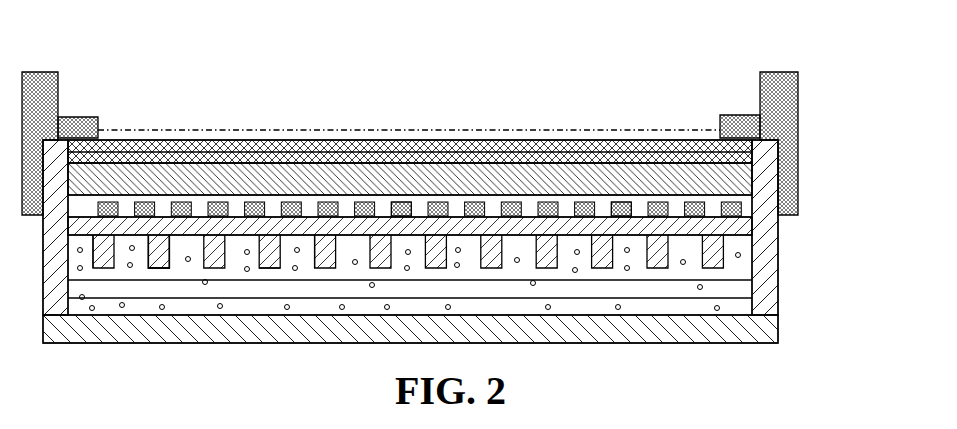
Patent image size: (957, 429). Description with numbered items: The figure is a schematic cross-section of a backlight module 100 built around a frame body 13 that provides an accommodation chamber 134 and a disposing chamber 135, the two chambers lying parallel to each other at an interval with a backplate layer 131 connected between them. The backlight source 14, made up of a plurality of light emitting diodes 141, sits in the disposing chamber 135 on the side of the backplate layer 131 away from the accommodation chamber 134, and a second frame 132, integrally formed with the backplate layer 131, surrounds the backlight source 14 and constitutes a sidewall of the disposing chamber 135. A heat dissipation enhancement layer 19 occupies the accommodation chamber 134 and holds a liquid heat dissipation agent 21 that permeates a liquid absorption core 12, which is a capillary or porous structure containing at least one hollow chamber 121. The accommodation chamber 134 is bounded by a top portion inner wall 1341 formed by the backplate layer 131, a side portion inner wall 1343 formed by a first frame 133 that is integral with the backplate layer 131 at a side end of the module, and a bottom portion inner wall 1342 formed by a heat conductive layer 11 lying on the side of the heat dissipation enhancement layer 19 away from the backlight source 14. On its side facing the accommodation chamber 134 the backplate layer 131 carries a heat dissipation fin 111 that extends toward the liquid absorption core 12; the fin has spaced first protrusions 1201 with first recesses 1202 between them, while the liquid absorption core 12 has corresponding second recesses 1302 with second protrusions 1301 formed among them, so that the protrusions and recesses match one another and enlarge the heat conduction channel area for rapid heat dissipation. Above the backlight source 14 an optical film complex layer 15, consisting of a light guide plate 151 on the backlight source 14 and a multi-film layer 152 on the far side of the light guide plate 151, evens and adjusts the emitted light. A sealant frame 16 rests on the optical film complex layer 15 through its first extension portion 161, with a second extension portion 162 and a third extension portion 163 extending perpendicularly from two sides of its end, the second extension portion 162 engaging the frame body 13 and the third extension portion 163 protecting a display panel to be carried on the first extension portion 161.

The backlight module 100 is at (808, 54).
The heat conductive layer 11 is at (780, 333).
The liquid absorption core 12 is at (745, 285).
The hollow chamber 121 is at (747, 302).
The liquid heat dissipation agent 21 is at (720, 308).
The heat dissipation enhancement layer 19 is at (845, 273).
The frame body 13 is at (850, 197).
The backplate layer 131 is at (735, 233).
The second frame 132 is at (757, 199).
The first frame 133 is at (753, 272).
The accommodation chamber 134 is at (753, 255).
The disposing chamber 135 is at (745, 210).
The top portion inner wall 1341 is at (410, 212).
The bottom portion inner wall 1342 is at (472, 315).
The side portion inner wall 1343 is at (77, 245).
The heat dissipation fin 111 is at (160, 258).
The first protrusions 1201 is at (158, 251).
The first recess 1202 is at (112, 222).
The second protrusions 1301 is at (308, 247).
The second recesses 1302 is at (270, 277).
The backlight source 14 is at (622, 210).
The light emitting diodes 141 is at (621, 209).
The optical film complex layer 15 is at (850, 153).
The light guide plate 151 is at (740, 182).
The multi-film layer 152 is at (750, 157).
The sealant frame 16 is at (850, 92).
The first extension portion 161 is at (733, 121).
The second extension portion 162 is at (788, 140).
The third extension portion 163 is at (788, 96).